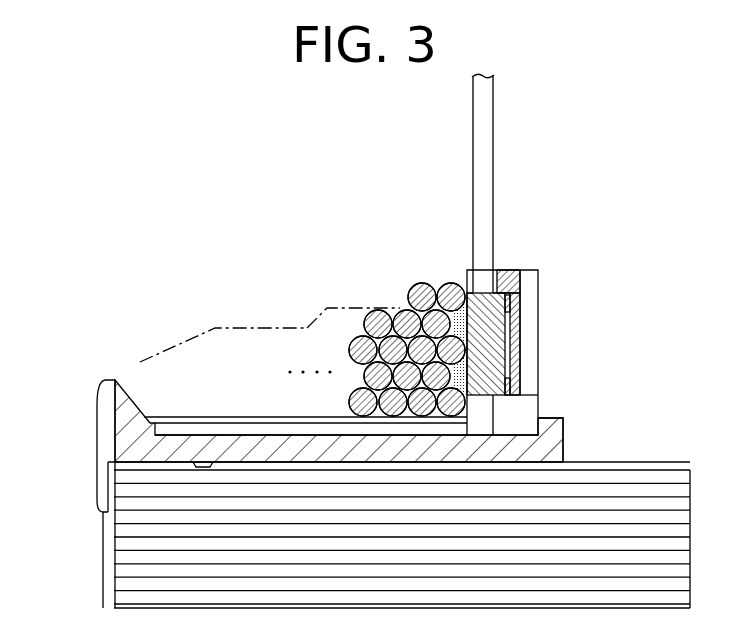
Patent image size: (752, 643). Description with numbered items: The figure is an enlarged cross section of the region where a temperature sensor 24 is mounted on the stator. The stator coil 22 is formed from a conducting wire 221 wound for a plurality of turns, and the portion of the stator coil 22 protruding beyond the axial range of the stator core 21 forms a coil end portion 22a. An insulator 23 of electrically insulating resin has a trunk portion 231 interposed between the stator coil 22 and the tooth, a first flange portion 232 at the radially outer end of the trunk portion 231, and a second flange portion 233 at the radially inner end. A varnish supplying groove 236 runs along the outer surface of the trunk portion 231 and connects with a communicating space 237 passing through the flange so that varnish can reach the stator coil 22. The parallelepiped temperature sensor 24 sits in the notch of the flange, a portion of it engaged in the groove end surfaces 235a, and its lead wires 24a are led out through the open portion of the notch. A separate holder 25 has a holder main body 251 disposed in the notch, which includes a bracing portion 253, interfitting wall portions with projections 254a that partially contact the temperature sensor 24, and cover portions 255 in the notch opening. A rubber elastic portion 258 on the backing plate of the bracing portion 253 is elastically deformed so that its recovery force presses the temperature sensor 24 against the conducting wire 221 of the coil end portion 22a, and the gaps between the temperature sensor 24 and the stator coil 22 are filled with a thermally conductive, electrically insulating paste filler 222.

The stator core 21 is at (675, 462).
The stator coil 22 is at (173, 347).
The coil end portion 22a is at (290, 335).
The conducting wire 221 is at (447, 285).
The filler 222 is at (398, 307).
The insulator 23 is at (540, 403).
The trunk portion 231 is at (263, 423).
The first flange portion 232 is at (513, 268).
The second flange portion 233 is at (105, 403).
The groove end surface 235a is at (363, 307).
The varnish supplying groove 236 is at (297, 434).
The communicating space 237 is at (555, 432).
The temperature sensor 24 is at (488, 340).
The lead wires 24a is at (493, 112).
The holder 25 is at (530, 268).
The holder main body 251 is at (502, 270).
The bracing portion 253 is at (515, 325).
The projections 254a is at (516, 306).
The cover portions 255 is at (468, 270).
The elastic portion 258 is at (513, 383).